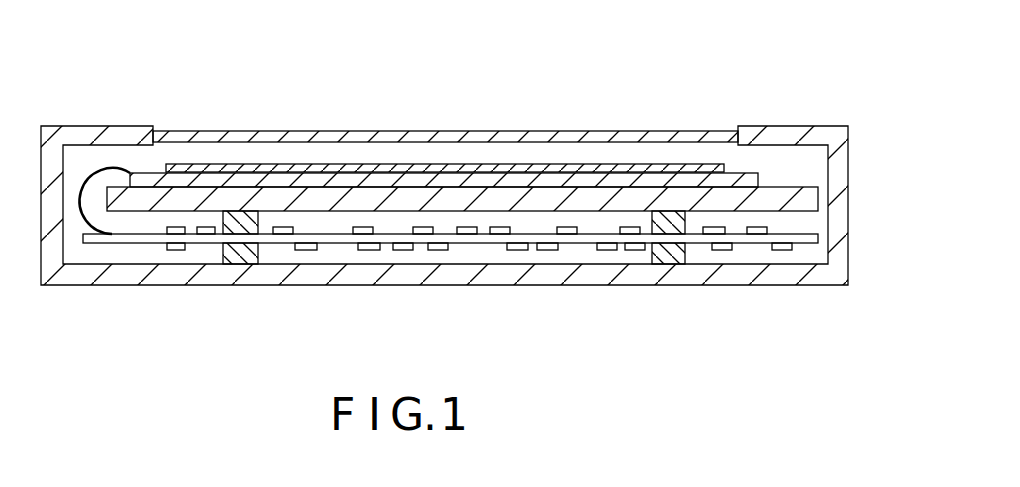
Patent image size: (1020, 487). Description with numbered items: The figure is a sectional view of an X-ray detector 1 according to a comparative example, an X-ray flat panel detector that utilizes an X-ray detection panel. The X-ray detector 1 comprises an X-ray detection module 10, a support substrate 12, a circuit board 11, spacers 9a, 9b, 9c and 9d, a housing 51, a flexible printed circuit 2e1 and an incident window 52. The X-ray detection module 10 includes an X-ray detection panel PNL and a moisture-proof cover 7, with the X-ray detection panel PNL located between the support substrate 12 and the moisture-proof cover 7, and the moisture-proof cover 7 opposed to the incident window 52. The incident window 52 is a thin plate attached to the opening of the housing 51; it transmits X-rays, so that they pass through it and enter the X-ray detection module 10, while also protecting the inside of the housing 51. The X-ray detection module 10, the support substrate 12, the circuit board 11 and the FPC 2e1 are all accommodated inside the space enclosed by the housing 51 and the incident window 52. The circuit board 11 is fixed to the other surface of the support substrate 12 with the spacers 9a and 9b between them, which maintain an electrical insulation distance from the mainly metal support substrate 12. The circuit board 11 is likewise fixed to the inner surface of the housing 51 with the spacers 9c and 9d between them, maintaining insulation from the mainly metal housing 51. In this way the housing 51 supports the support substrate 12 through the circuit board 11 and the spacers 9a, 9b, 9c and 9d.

The X-ray detector 1 is at (750, 60).
The flexible printed circuit 2e1 is at (94, 178).
The moisture-proof cover 7 is at (582, 164).
The X-ray detection panel PNL is at (640, 180).
The X-ray detection module 10 is at (662, 76).
The support substrate 12 is at (790, 196).
The circuit board 11 is at (478, 250).
The spacer 9a is at (240, 211).
The spacer 9b is at (668, 211).
The spacer 9c is at (238, 264).
The spacer 9d is at (667, 264).
The housing 51 is at (802, 275).
The incident window 52 is at (343, 131).